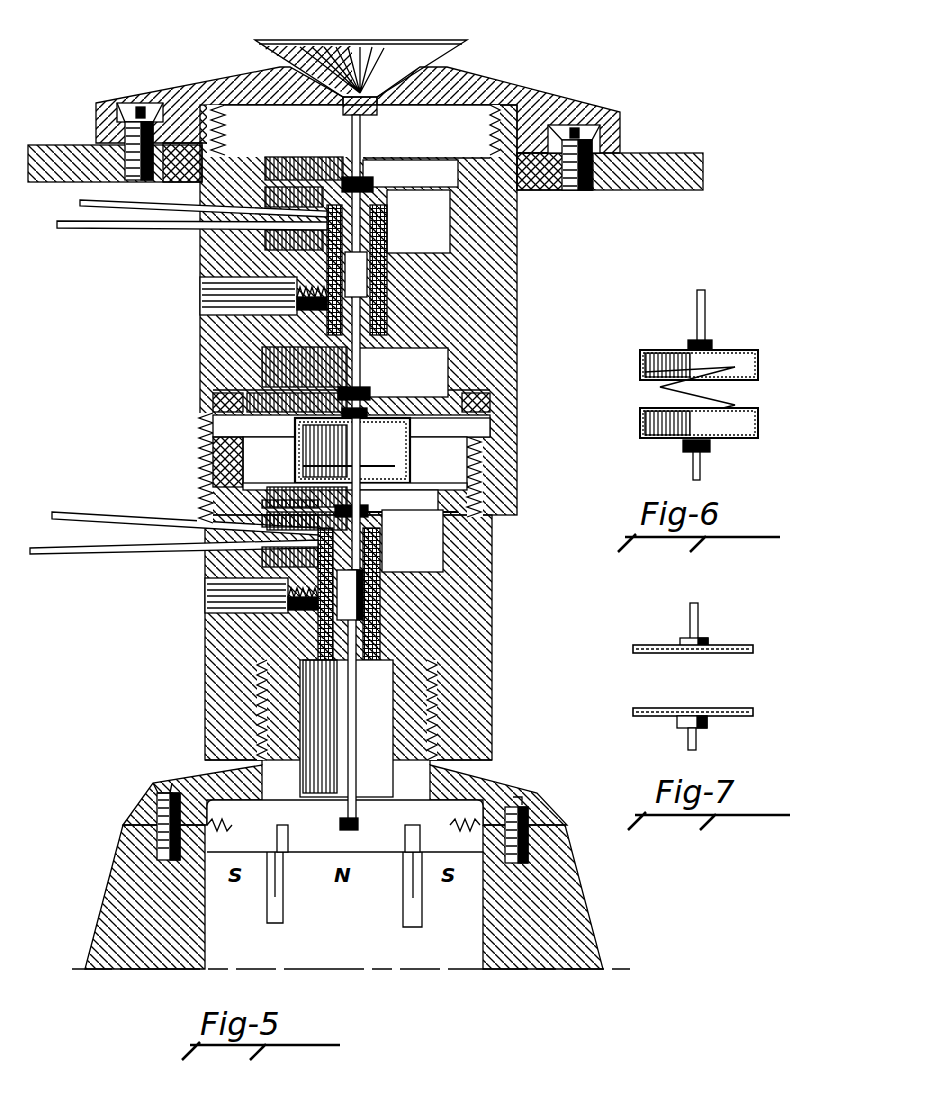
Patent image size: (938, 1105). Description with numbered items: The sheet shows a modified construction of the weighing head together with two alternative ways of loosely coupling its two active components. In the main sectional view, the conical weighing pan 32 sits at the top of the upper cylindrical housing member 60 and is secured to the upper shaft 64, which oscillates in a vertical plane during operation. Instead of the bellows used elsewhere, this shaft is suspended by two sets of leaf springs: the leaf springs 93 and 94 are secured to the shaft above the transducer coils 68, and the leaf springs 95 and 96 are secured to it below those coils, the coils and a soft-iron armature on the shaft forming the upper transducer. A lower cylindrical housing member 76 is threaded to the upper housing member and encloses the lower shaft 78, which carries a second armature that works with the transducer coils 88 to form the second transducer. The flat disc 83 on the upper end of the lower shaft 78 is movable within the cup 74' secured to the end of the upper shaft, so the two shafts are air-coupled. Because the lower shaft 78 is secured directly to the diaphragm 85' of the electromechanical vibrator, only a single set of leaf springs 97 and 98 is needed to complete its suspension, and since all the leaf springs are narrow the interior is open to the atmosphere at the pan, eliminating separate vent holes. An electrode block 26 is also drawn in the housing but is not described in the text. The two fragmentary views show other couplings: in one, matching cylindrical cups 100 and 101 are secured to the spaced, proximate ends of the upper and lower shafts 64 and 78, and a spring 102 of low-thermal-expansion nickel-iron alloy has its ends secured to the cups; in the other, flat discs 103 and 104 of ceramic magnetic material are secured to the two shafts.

In FIG. 5, the conical weighing pan 32 is at (350, 40).
In FIG. 5, the leaf spring 94 is at (303, 170).
In FIG. 5, the leaf spring 93 is at (392, 178).
In FIG. 5, the transducer coils 68 is at (390, 232).
In FIG. 5, the upper cylindrical housing member 60 is at (518, 223).
In FIG. 5, the electrode block 26 is at (300, 300).
In FIG. 5, the leaf spring 96 is at (237, 392).
In FIG. 5, the upper shaft 64 is at (362, 378).
In FIG. 6, the upper shaft 64 is at (705, 312).
In FIG. 7, the upper shaft 64 is at (700, 613).
In FIG. 5, the leaf spring 95 is at (406, 397).
In FIG. 5, the flat disc 83 is at (392, 472).
In FIG. 5, the cup 74' is at (450, 452).
In FIG. 5, the leaf spring 98 is at (290, 490).
In FIG. 5, the leaf spring 97 is at (399, 508).
In FIG. 5, the transducer coils 88 is at (385, 553).
In FIG. 5, the lower cylindrical housing member 76 is at (493, 620).
In FIG. 5, the lower shaft 78 is at (353, 735).
In FIG. 6, the lower shaft 78 is at (702, 466).
In FIG. 7, the lower shaft 78 is at (698, 742).
In FIG. 5, the diaphragm 85' is at (363, 834).
In FIG. 6, the cylindrical cup 100 is at (760, 357).
In FIG. 6, the spring 102 is at (735, 406).
In FIG. 6, the cylindrical cup 101 is at (640, 428).
In FIG. 7, the flat disc 103 is at (740, 647).
In FIG. 7, the flat disc 104 is at (740, 710).